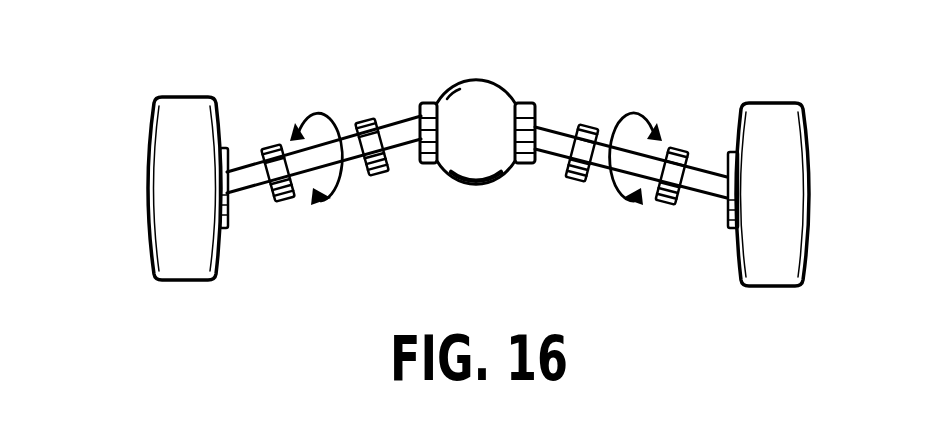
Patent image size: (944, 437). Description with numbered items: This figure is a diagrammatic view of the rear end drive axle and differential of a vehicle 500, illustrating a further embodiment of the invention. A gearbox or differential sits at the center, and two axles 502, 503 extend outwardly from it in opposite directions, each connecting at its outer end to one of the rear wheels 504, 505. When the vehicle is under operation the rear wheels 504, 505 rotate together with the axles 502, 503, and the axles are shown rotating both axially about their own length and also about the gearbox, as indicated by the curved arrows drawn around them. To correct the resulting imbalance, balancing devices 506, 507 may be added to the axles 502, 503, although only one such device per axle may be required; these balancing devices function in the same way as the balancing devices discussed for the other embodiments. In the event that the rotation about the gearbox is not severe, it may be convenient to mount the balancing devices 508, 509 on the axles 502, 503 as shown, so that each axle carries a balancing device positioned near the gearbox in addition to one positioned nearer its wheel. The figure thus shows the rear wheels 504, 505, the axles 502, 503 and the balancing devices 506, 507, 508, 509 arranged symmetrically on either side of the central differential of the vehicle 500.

The rear end of a vehicle 500 is at (503, 28).
The axle 502 is at (398, 126).
The axle 503 is at (546, 131).
The rear wheel 504 is at (153, 252).
The rear wheel 505 is at (803, 253).
The balancing device 506 is at (278, 201).
The balancing device 507 is at (377, 176).
The balancing device 508 is at (576, 174).
The balancing device 509 is at (667, 203).